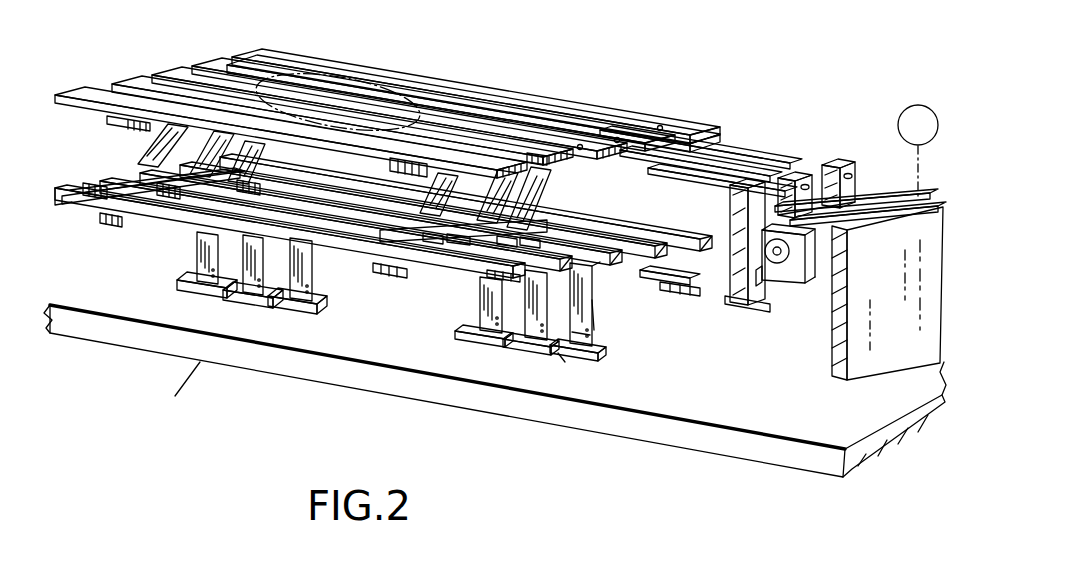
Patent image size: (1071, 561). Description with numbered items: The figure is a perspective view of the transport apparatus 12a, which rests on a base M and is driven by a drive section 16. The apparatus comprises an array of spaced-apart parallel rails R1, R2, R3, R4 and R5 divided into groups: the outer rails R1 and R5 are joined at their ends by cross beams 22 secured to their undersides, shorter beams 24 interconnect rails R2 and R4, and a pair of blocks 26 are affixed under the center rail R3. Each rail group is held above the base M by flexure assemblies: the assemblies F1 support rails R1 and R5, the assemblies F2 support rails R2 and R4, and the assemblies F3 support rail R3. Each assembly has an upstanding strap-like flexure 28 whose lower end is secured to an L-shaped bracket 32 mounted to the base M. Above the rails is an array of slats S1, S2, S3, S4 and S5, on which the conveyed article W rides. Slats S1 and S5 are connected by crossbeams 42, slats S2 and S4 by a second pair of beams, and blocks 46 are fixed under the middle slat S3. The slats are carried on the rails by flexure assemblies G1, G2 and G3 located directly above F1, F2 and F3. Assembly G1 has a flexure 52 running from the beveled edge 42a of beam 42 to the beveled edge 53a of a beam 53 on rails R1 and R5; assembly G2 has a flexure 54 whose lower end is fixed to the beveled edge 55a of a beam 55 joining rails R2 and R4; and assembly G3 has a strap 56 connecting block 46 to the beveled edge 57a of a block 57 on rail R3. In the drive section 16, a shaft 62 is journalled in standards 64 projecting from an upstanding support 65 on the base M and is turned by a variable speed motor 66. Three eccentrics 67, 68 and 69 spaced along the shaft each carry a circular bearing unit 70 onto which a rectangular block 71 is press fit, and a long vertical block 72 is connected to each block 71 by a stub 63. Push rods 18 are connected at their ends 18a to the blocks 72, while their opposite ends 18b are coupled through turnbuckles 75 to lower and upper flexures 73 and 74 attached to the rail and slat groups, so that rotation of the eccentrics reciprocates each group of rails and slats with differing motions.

The transport apparatus 12a is at (165, 387).
The base M is at (312, 364).
The drive section 16 is at (826, 132).
The push rods 18 is at (806, 172).
The push rod ends 18a is at (852, 174).
The opposite push rod ends 18b is at (790, 174).
The cross beams 22 is at (104, 222).
The shorter beams 24 is at (593, 309).
The blocks 26 is at (592, 268).
The flexure 28 is at (594, 334).
The L-shaped bracket 32 is at (566, 356).
The crossbeams 42 is at (112, 124).
The beveled edge 42a is at (108, 121).
The blocks 46 is at (586, 164).
The strap-like flexure 52 is at (116, 155).
The beam 53 is at (82, 184).
The beveled edge 53a is at (60, 198).
The strap-like flexure 54 is at (208, 137).
The beam 55 is at (120, 184).
The beveled edge 55a is at (170, 207).
The strap 56 is at (236, 142).
The block 57 is at (552, 228).
The beveled edge 57a is at (218, 199).
The shaft 62 is at (764, 286).
The stub 63 is at (734, 236).
The standards 64 is at (882, 204).
The upstanding support 65 is at (832, 368).
The variable speed motor 66 is at (908, 120).
The eccentric 67 is at (818, 252).
The eccentric 68 is at (856, 216).
The eccentric 69 is at (896, 212).
The circular bearing unit 70 is at (787, 260).
The rectangular block 71 is at (782, 258).
The long vertical block 72 is at (746, 306).
The lower flexible straps 73 is at (670, 278).
The upper flexible straps 74 is at (712, 134).
The turnbuckle 75 is at (752, 153).
The flexure assemblies F1 is at (186, 296).
The flexure assemblies F2 is at (240, 308).
The flexure assemblies F3 is at (296, 314).
The flexure assembly G1 is at (142, 148).
The flexure assembly G2 is at (194, 134).
The flexure assembly G3 is at (266, 160).
The rail R1 is at (436, 276).
The rail R2 is at (452, 270).
The rail R3 is at (576, 236).
The rail R4 is at (616, 232).
The rail R5 is at (654, 228).
The slat S1 is at (72, 88).
The slat S2 is at (118, 75).
The slat S3 is at (160, 65).
The slat S4 is at (198, 58).
The slat S5 is at (242, 50).
The workpiece W is at (315, 76).